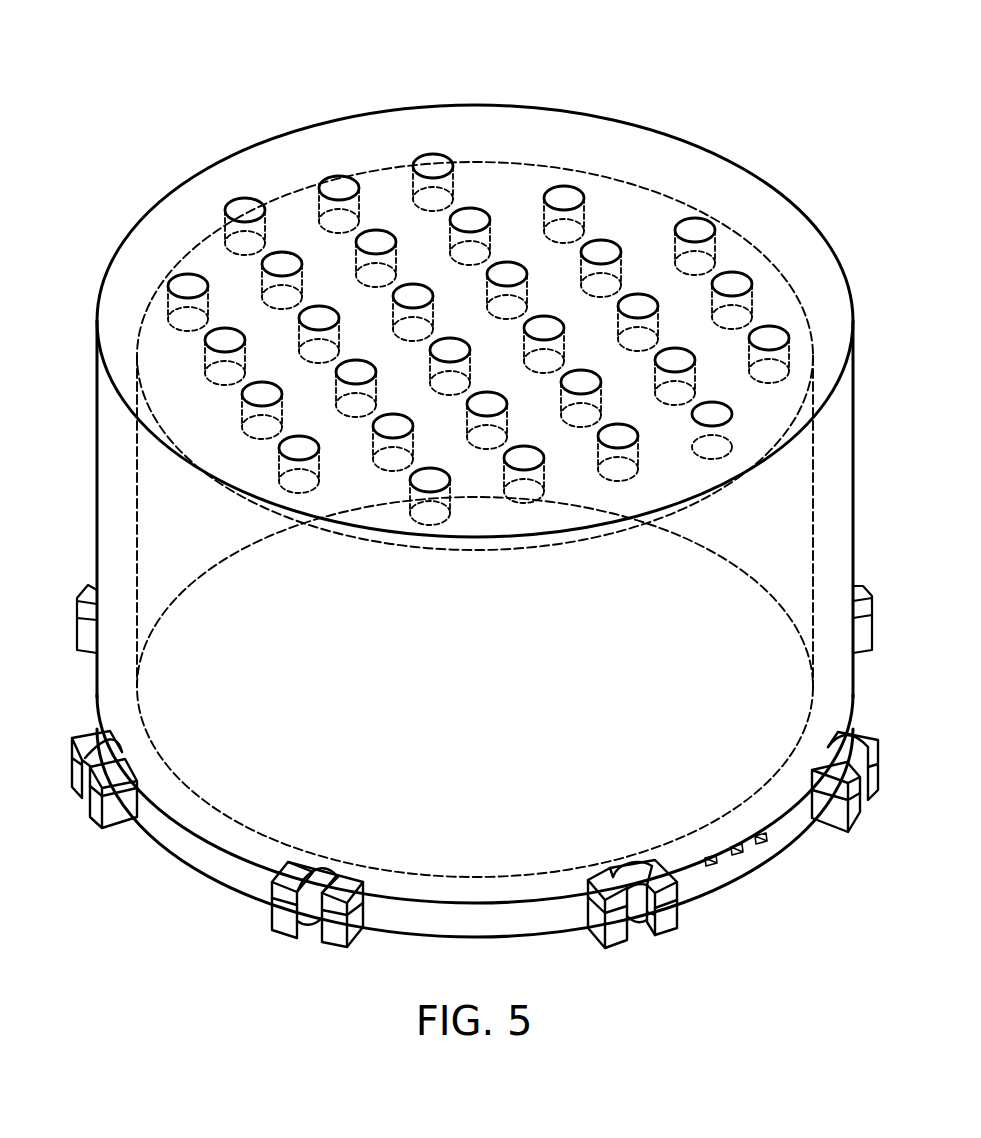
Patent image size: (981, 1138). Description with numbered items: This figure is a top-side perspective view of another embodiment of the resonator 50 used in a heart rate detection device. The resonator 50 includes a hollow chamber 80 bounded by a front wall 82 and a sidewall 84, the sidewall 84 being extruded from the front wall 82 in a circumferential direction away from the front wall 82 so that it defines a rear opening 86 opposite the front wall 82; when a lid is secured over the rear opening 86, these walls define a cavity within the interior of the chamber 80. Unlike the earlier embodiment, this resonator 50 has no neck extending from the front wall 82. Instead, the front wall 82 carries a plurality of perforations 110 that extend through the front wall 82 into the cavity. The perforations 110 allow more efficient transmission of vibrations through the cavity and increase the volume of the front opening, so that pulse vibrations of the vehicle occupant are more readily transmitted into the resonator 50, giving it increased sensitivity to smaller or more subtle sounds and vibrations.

The resonator 50 is at (778, 113).
The chamber 80 is at (813, 508).
The front wall 82 is at (189, 186).
The sidewall 84 is at (123, 519).
The rear opening 86 is at (240, 833).
The plurality of perforations 110 is at (283, 261).